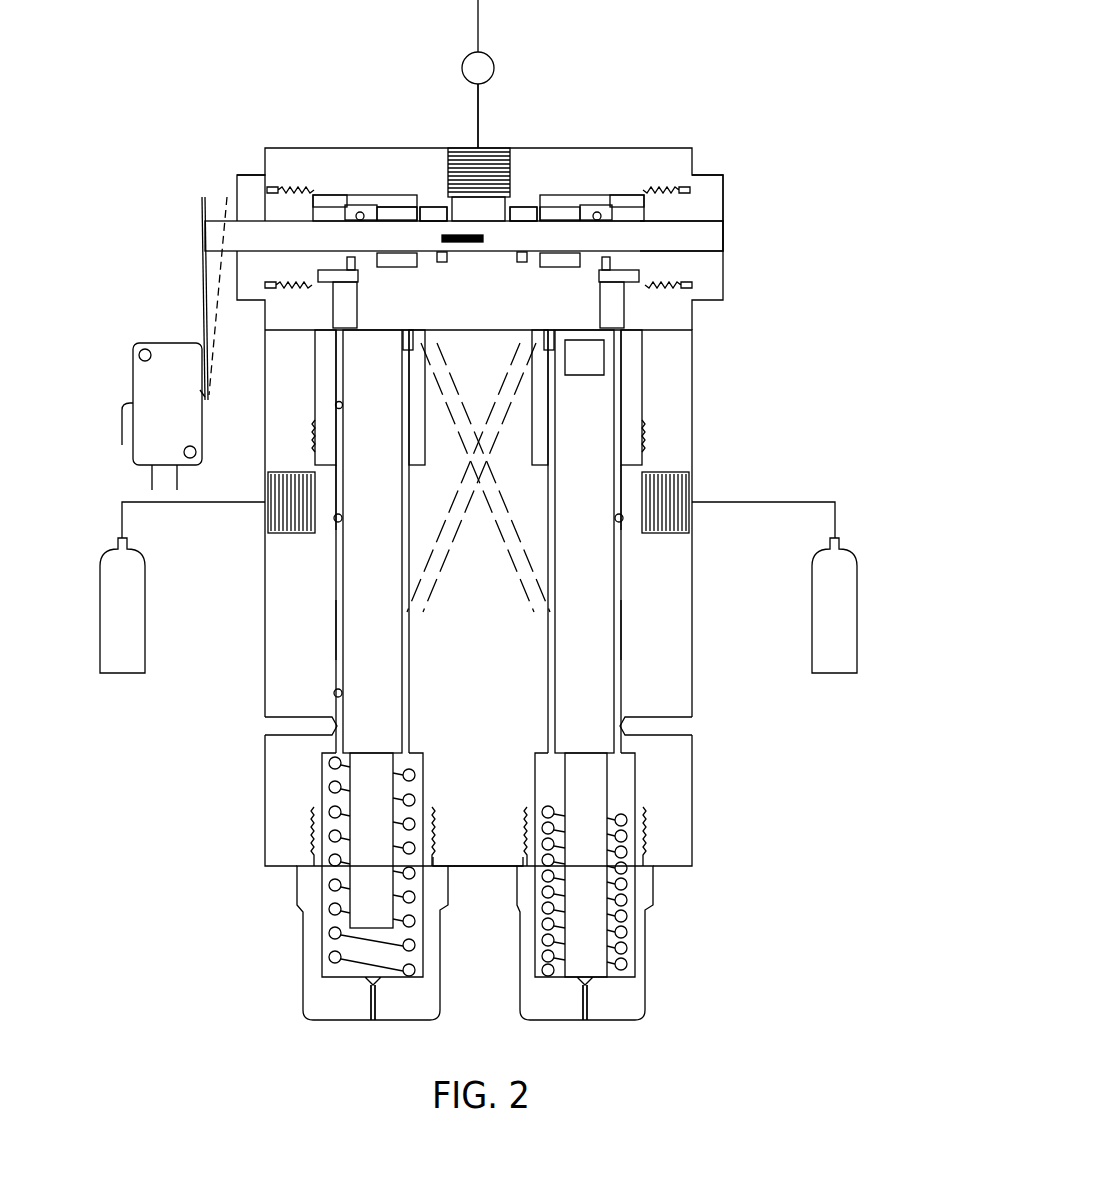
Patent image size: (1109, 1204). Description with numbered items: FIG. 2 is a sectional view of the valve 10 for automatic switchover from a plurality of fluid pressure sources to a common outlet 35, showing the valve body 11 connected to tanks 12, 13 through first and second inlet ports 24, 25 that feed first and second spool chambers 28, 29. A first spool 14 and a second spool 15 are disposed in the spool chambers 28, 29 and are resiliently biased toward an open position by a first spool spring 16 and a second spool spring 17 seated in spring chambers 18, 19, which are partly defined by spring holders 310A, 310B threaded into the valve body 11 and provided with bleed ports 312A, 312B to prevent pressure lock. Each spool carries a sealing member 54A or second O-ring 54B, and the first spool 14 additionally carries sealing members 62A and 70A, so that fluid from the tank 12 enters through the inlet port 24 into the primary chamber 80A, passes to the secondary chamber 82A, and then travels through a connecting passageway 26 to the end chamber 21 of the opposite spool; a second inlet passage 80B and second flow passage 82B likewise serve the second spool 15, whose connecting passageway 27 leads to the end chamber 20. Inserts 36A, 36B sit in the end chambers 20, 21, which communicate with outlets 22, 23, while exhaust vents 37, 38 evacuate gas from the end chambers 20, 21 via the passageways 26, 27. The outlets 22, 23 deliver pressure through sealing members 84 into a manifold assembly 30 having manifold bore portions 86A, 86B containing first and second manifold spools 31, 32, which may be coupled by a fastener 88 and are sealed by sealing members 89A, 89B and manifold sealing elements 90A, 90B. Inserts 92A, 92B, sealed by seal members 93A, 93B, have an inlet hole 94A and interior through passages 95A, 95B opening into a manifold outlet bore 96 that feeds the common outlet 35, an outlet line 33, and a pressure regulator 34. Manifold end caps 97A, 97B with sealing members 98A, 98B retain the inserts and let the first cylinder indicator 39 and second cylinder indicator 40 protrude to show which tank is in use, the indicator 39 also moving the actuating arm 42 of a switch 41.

The valve 10 is at (766, 64).
The valve body 11 is at (478, 856).
The tank 12 is at (102, 605).
The tank 13 is at (856, 605).
The first spool 14 is at (345, 608).
The second spool 15 is at (612, 608).
The first spool spring 16 is at (335, 878).
The second spool spring 17 is at (612, 895).
The spring chamber 18 is at (331, 767).
The spring chamber 19 is at (632, 767).
The end chamber 20 is at (330, 350).
The end chamber 21 is at (650, 348).
The outlet 22 is at (330, 312).
The outlet 23 is at (630, 312).
The first inlet port 24 is at (320, 518).
The second inlet port 25 is at (634, 518).
The connecting passageway 26 is at (431, 594).
The connecting passageway 27 is at (529, 594).
The first spool chamber 28 is at (324, 472).
The second spool chamber 29 is at (633, 472).
The manifold assembly 30 is at (598, 150).
The first manifold spool 31 is at (235, 243).
The second manifold spool 32 is at (705, 238).
The outlet line 33 is at (480, 98).
The pressure regulator 34 is at (494, 58).
The common outlet 35 is at (462, 146).
The insert 36A is at (330, 385).
The insert 36B is at (640, 375).
The exhaust vent 37 is at (277, 726).
The exhaust vent 38 is at (683, 726).
The first cylinder indicator 39 is at (205, 209).
The second cylinder indicator 40 is at (728, 235).
The switch 41 is at (133, 380).
The actuating arm 42 is at (205, 320).
The sealing member 54A is at (336, 520).
The second O-ring 54B is at (621, 520).
The sealing member 62A is at (333, 405).
The sealing member 70A is at (336, 693).
The primary chamber 80A is at (332, 478).
The second inlet passage 80B is at (628, 478).
The secondary chamber 82A is at (338, 632).
The second flow passage 82B is at (622, 632).
The sealing member 84 is at (410, 292).
The manifold bore portion 86A is at (268, 189).
The manifold bore portion 86B is at (684, 189).
The fastener 88 is at (402, 215).
The sealing member 89A is at (438, 256).
The sealing member 89B is at (520, 256).
The manifold sealing element 90A is at (357, 213).
The manifold sealing element 90B is at (563, 213).
The insert 92A is at (360, 212).
The insert 92B is at (640, 200).
The seal member 93A is at (380, 205).
The seal member 93B is at (600, 205).
The inlet hole 94A is at (330, 200).
The interior through passage 95A is at (398, 218).
The interior through passage 95B is at (548, 210).
The manifold outlet bore 96 is at (481, 206).
The manifold end cap 97A is at (242, 185).
The manifold end cap 97B is at (713, 188).
The sealing member 98A is at (325, 278).
The sealing member 98B is at (628, 270).
The spring holder 310A is at (300, 1000).
The spring holder 310B is at (652, 1000).
The bleed port 312A is at (373, 1026).
The bleed port 312B is at (585, 1026).